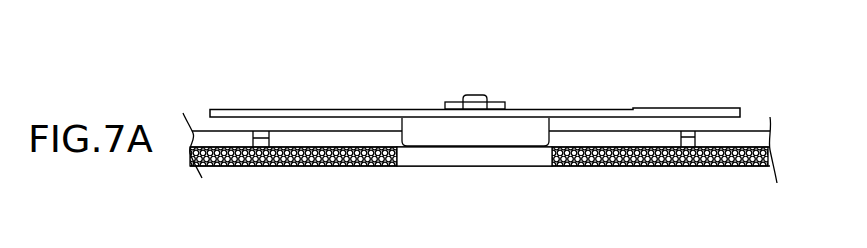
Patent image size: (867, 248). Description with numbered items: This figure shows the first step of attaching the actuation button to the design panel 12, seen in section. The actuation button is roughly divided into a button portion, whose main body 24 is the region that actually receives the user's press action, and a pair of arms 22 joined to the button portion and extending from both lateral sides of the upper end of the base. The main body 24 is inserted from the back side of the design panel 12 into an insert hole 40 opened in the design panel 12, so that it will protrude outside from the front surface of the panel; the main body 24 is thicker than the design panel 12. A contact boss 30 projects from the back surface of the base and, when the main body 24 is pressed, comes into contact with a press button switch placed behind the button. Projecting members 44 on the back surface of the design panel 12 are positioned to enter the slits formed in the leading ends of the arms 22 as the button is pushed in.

The design panel 12 is at (722, 167).
The arms 22 is at (287, 109).
The main body 24 is at (442, 137).
The contact boss 30 is at (475, 95).
The insert hole 40 is at (530, 158).
The projecting members 44 is at (689, 130).